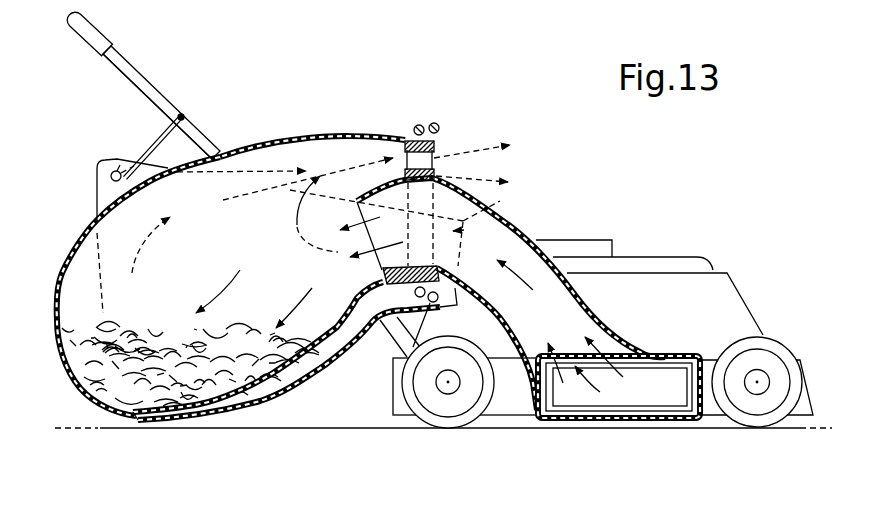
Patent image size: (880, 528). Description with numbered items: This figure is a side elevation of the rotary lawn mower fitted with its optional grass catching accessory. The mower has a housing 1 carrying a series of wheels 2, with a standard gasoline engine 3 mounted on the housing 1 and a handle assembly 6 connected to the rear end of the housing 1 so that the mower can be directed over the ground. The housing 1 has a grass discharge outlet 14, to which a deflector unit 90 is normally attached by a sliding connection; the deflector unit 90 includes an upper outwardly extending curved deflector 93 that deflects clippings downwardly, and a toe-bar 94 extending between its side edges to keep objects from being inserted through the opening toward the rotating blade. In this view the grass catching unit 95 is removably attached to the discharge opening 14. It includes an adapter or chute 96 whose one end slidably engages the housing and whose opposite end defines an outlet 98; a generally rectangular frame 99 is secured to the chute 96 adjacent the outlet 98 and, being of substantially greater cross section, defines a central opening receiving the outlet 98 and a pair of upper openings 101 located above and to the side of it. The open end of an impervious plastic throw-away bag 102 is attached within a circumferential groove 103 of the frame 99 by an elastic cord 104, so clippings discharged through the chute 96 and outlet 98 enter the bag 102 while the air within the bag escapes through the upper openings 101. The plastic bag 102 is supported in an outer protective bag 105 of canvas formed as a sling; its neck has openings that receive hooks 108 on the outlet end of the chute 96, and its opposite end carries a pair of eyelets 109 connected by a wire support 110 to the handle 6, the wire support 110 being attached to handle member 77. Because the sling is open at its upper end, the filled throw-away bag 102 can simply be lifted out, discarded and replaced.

The housing 1 is at (708, 350).
The wheels 2 is at (441, 422).
The gasoline engine 3 is at (625, 280).
The handle assembly 6 is at (155, 84).
The grass discharge outlet 14 is at (678, 390).
The handle member 77 is at (168, 101).
The deflector unit 90 is at (550, 394).
The curved deflector 93 is at (657, 352).
The toe-bar 94 is at (637, 411).
The grass catching unit 95 is at (323, 132).
The chute 96 is at (527, 232).
The outlet 98 is at (378, 263).
The frame 99 is at (439, 137).
The upper openings 101 is at (468, 140).
The throw-away bag 102 is at (278, 143).
The circumferential groove 103 is at (416, 128).
The elastic cord 104 is at (421, 124).
The outer protective bag 105 is at (283, 405).
The hooks 108 is at (488, 201).
The eyelets 109 is at (109, 178).
The wire support 110 is at (160, 140).